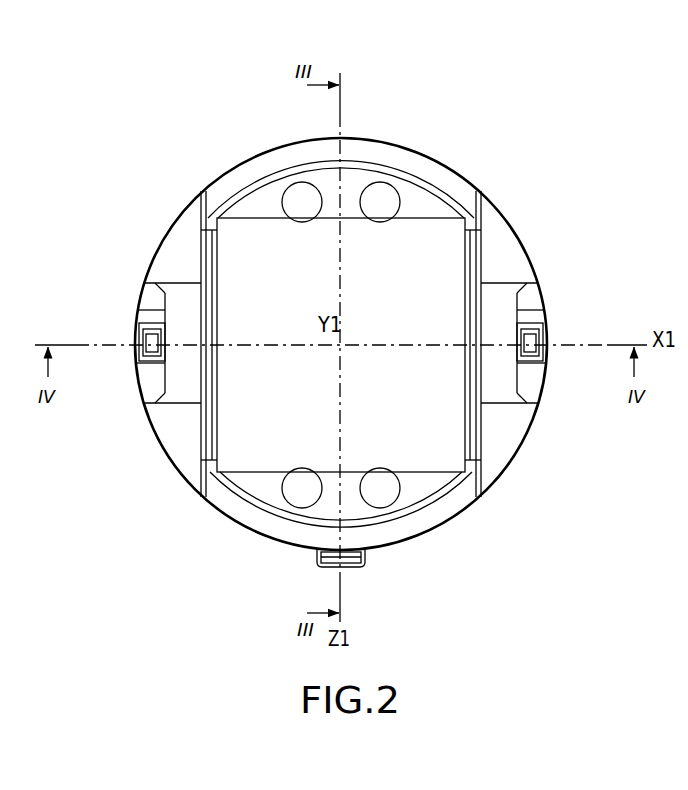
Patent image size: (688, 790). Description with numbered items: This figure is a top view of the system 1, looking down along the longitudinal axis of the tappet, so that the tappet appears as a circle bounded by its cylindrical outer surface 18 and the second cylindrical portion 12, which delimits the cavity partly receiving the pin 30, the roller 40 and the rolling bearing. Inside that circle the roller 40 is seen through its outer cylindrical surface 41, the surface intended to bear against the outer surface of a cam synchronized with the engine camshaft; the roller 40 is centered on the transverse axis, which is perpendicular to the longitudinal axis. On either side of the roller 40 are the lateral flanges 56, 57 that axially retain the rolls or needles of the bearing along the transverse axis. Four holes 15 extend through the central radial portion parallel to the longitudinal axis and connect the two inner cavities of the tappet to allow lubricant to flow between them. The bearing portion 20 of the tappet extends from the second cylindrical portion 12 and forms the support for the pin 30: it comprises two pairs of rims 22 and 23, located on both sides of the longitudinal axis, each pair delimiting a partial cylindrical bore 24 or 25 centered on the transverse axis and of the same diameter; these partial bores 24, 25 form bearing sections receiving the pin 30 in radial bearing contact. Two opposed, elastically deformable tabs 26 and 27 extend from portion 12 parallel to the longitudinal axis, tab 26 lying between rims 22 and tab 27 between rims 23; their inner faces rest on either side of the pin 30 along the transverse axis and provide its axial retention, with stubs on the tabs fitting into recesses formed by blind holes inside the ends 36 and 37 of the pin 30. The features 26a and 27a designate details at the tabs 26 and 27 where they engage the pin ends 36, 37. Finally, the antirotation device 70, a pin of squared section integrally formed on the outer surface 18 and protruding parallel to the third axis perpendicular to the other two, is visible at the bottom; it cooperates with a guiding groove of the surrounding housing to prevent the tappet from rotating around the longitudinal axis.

The system 1 is at (136, 133).
The second cylindrical portion 12 is at (456, 512).
The holes 15 is at (382, 196).
The cylindrical outer surface 18 is at (276, 549).
The bearing portion 20 is at (582, 282).
The pair of rims 22 is at (150, 276).
The pair of rims 23 is at (517, 275).
The partial cylindrical bore 24 is at (146, 396).
The partial cylindrical bore 25 is at (550, 363).
The tab 26 is at (135, 350).
The left fastener head 26a is at (168, 352).
The tab 27 is at (548, 348).
The right fastener head 27a is at (515, 352).
The pin 30 is at (185, 307).
The end 36 is at (137, 310).
The end 37 is at (540, 324).
The roller 40 is at (238, 242).
The outer cylindrical surface 41 is at (280, 242).
The lateral flange 56 is at (198, 230).
The lateral flange 57 is at (482, 230).
The antirotation device 70 is at (317, 567).